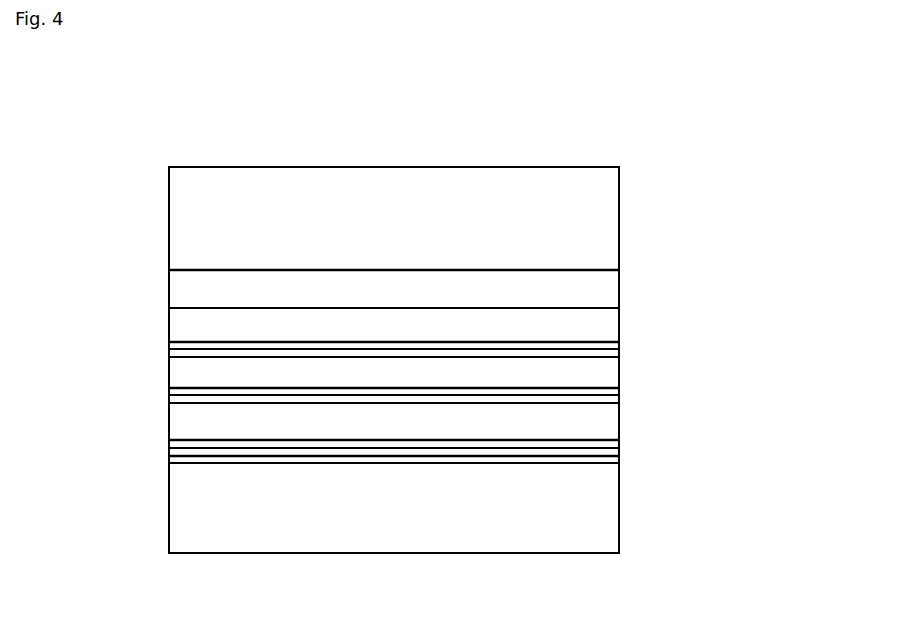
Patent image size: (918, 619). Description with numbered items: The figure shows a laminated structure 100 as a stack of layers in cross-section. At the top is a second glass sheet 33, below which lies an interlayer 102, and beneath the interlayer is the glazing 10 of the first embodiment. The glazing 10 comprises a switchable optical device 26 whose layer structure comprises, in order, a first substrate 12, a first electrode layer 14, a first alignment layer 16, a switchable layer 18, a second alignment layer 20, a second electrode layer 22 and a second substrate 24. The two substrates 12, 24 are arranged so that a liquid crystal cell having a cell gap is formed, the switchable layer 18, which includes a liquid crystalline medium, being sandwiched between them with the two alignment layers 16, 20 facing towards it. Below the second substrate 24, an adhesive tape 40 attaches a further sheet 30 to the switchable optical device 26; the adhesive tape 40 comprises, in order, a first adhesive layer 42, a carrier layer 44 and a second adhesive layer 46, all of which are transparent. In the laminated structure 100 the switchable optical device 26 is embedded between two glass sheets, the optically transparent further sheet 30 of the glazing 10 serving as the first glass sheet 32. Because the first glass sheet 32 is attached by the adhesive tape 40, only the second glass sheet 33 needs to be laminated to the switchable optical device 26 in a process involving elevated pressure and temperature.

The laminated structure 100 is at (382, 140).
The second glass sheet 33 is at (589, 197).
The interlayer 102 is at (593, 288).
The first substrate 12 is at (593, 324).
The first electrode layer 14 is at (175, 343).
The first alignment layer 16 is at (597, 353).
The switchable layer 18 is at (182, 377).
The second alignment layer 20 is at (607, 392).
The second electrode layer 22 is at (185, 398).
The second substrate 24 is at (602, 430).
The switchable optical device 26 is at (735, 303).
The adhesive tape 40 is at (735, 438).
The first adhesive layer 42 is at (177, 447).
The carrier layer 44 is at (585, 451).
The second adhesive layer 46 is at (177, 458).
The further sheet 30 is at (460, 516).
The first glass sheet 32 is at (588, 502).
The glazing 10 is at (798, 305).